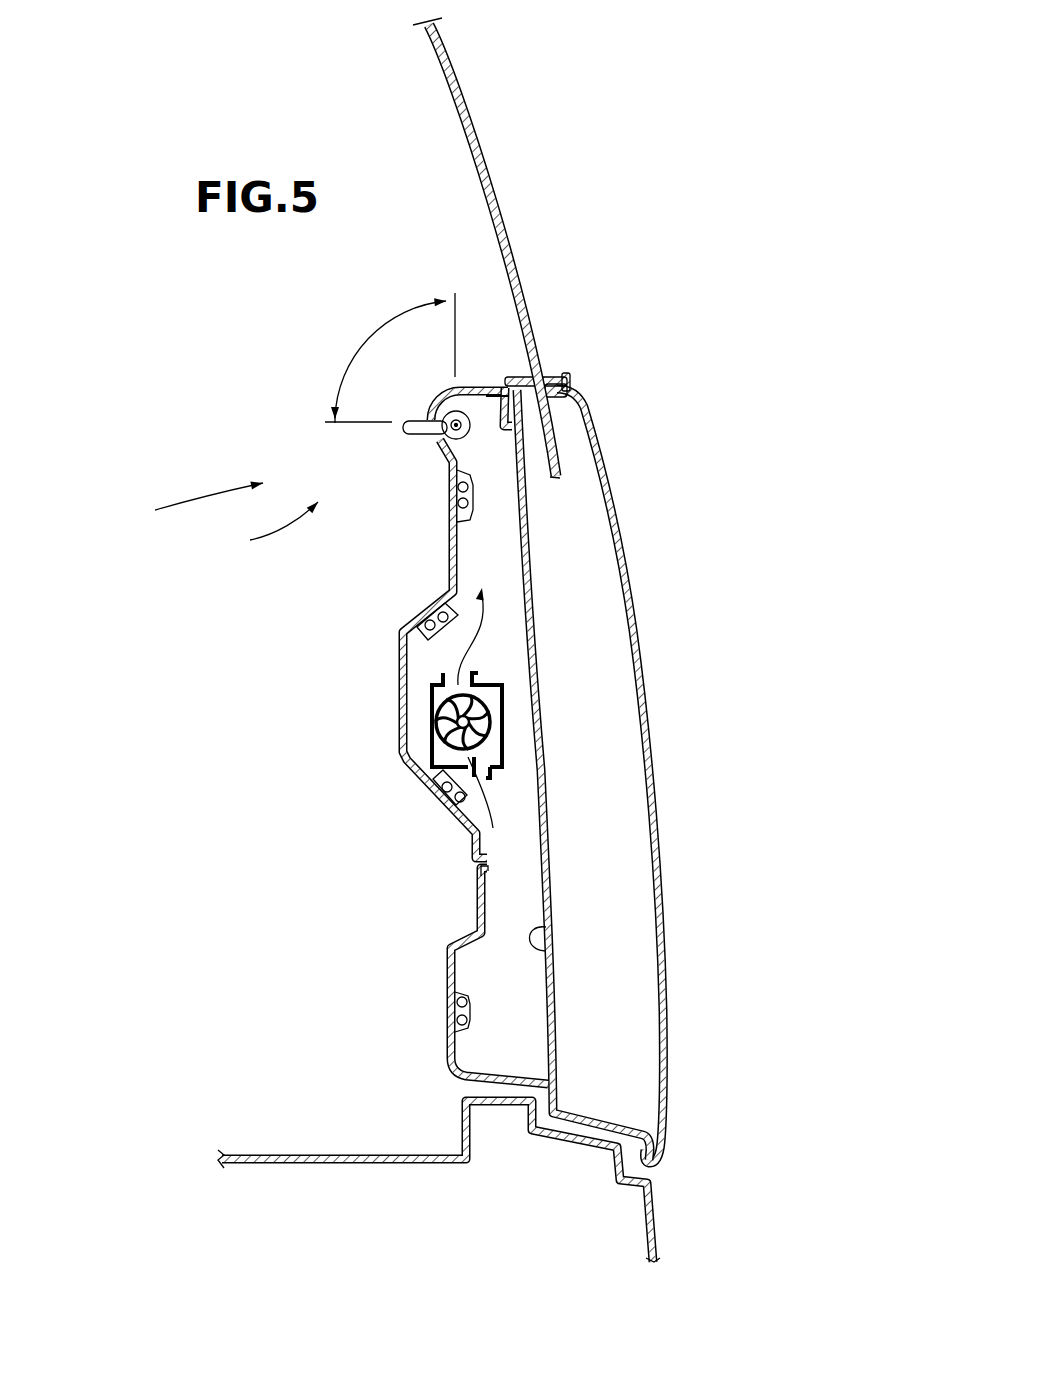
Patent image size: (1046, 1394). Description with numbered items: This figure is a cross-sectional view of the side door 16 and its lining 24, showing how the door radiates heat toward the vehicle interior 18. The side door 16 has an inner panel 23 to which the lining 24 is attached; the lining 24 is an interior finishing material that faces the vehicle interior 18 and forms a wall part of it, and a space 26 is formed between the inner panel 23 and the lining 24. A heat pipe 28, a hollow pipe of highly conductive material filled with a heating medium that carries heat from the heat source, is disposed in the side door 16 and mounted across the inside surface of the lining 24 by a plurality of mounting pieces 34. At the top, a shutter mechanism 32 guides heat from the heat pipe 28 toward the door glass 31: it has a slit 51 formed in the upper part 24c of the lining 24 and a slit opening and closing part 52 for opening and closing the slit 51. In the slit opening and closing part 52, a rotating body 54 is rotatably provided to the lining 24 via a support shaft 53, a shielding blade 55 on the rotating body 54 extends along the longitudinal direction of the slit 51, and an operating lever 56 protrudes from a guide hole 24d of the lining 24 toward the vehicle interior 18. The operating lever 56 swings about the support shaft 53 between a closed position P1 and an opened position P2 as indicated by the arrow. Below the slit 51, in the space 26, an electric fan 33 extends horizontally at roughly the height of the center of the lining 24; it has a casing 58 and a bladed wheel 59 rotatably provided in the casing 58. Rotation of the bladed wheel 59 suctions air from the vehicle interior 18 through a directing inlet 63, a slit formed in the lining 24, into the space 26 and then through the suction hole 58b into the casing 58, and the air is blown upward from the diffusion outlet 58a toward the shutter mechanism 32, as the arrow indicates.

The side door 16 is at (609, 478).
The vehicle interior 18 is at (206, 961).
The inner panel 23 is at (533, 580).
The lining 24 is at (383, 665).
The upper part of the lining 24c is at (521, 378).
The guide hole 24d is at (443, 398).
The space 26 is at (529, 903).
The heat pipe 28 is at (445, 792).
The door glass 31 is at (473, 120).
The shutter mechanism 32 is at (190, 504).
The electric fan 33 is at (258, 747).
The mounting pieces 34 is at (468, 1008).
The slit 51 is at (497, 386).
The slit opening and closing part 52 is at (265, 531).
The support shaft 53 is at (446, 450).
The rotating body 54 is at (447, 437).
The shielding blade 55 is at (484, 430).
The operating lever 56 is at (403, 428).
The casing 58 is at (432, 700).
The diffusion outlet 58a is at (476, 672).
The suction hole 58b is at (480, 778).
The bladed wheel 59 is at (432, 752).
The directing inlet 63 is at (478, 876).
The closed position P1 is at (338, 424).
The opened position P2 is at (398, 342).